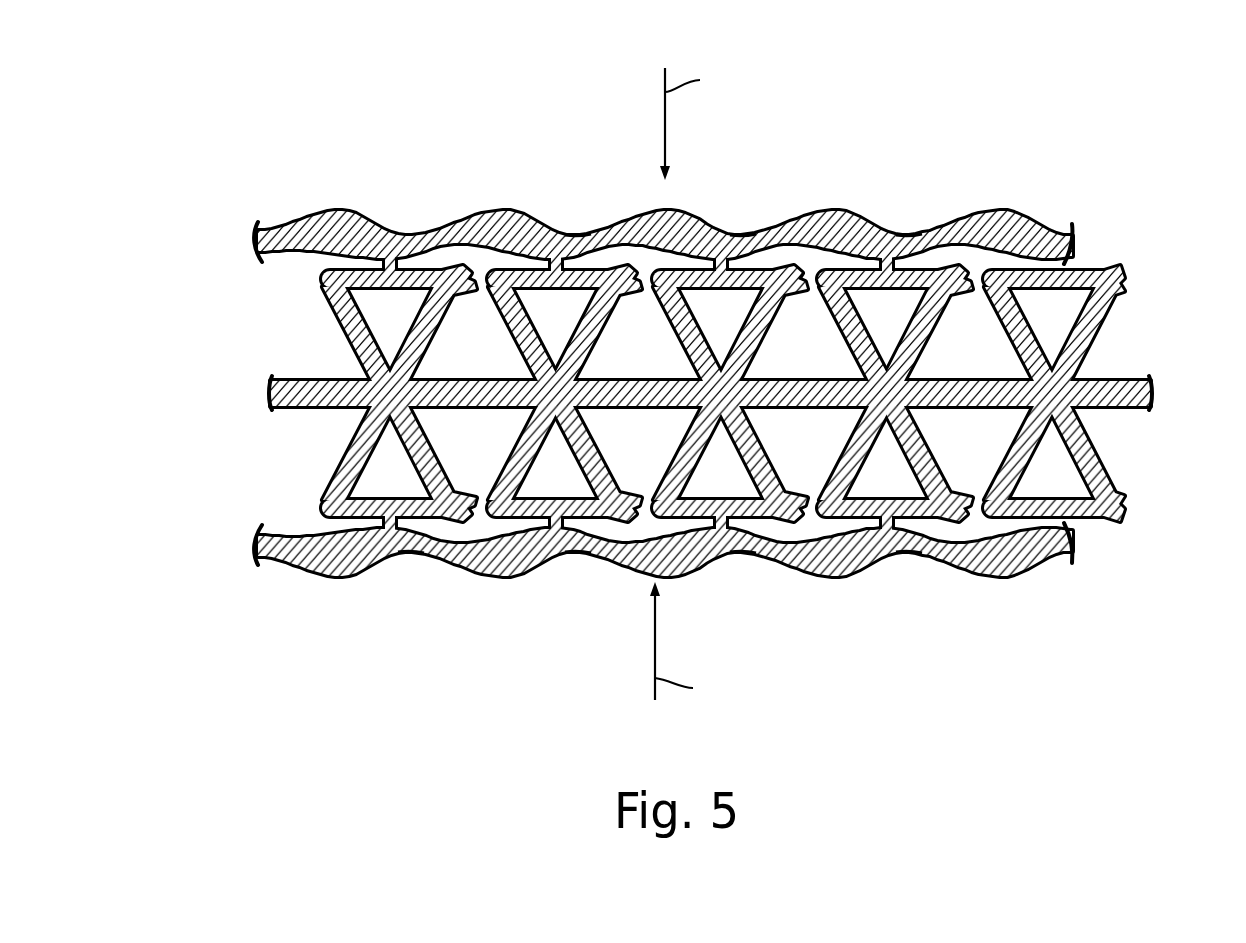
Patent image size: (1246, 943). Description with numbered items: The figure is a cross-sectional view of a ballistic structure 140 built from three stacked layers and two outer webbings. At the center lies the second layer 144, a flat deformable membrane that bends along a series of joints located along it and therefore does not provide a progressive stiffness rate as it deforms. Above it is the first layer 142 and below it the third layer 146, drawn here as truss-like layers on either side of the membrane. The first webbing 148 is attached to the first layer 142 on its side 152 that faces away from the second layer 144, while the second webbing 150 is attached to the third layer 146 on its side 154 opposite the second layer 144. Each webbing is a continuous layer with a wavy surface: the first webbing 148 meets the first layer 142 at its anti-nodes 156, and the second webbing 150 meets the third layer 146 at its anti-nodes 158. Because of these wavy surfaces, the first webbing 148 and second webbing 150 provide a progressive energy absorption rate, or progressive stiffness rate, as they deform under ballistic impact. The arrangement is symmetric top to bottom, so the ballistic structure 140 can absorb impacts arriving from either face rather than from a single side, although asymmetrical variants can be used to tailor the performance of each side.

The ballistic structure 140 is at (669, 371).
The first layer 142 is at (710, 316).
The second layer 144 is at (272, 393).
The third layer 146 is at (710, 470).
The first webbing 148 is at (835, 211).
The second webbing 150 is at (488, 578).
The side 152 is at (1124, 275).
The side 154 is at (1092, 471).
The anti-nodes 156 is at (581, 234).
The anti-nodes 158 is at (407, 553).